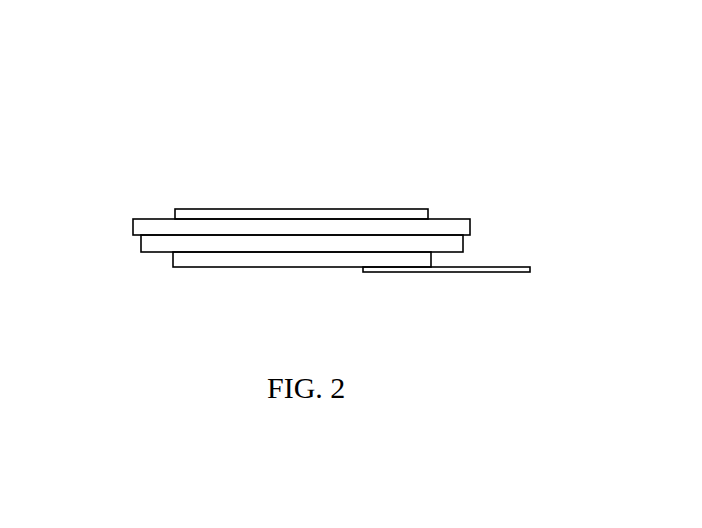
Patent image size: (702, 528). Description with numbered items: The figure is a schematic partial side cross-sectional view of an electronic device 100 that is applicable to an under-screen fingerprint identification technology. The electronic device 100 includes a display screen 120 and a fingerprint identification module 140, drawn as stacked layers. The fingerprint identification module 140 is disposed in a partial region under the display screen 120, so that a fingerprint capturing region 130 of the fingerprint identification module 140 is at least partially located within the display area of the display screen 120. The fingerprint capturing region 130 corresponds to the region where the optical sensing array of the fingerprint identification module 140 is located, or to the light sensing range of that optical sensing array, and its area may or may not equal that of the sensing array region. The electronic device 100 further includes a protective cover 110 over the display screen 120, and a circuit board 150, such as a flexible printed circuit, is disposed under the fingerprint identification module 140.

The electronic device 100 is at (330, 121).
The protective cover 110 is at (470, 228).
The display screen 120 is at (142, 238).
The fingerprint capturing region 130 is at (302, 205).
The fingerprint identification module 140 is at (292, 258).
The circuit board 150 is at (488, 272).